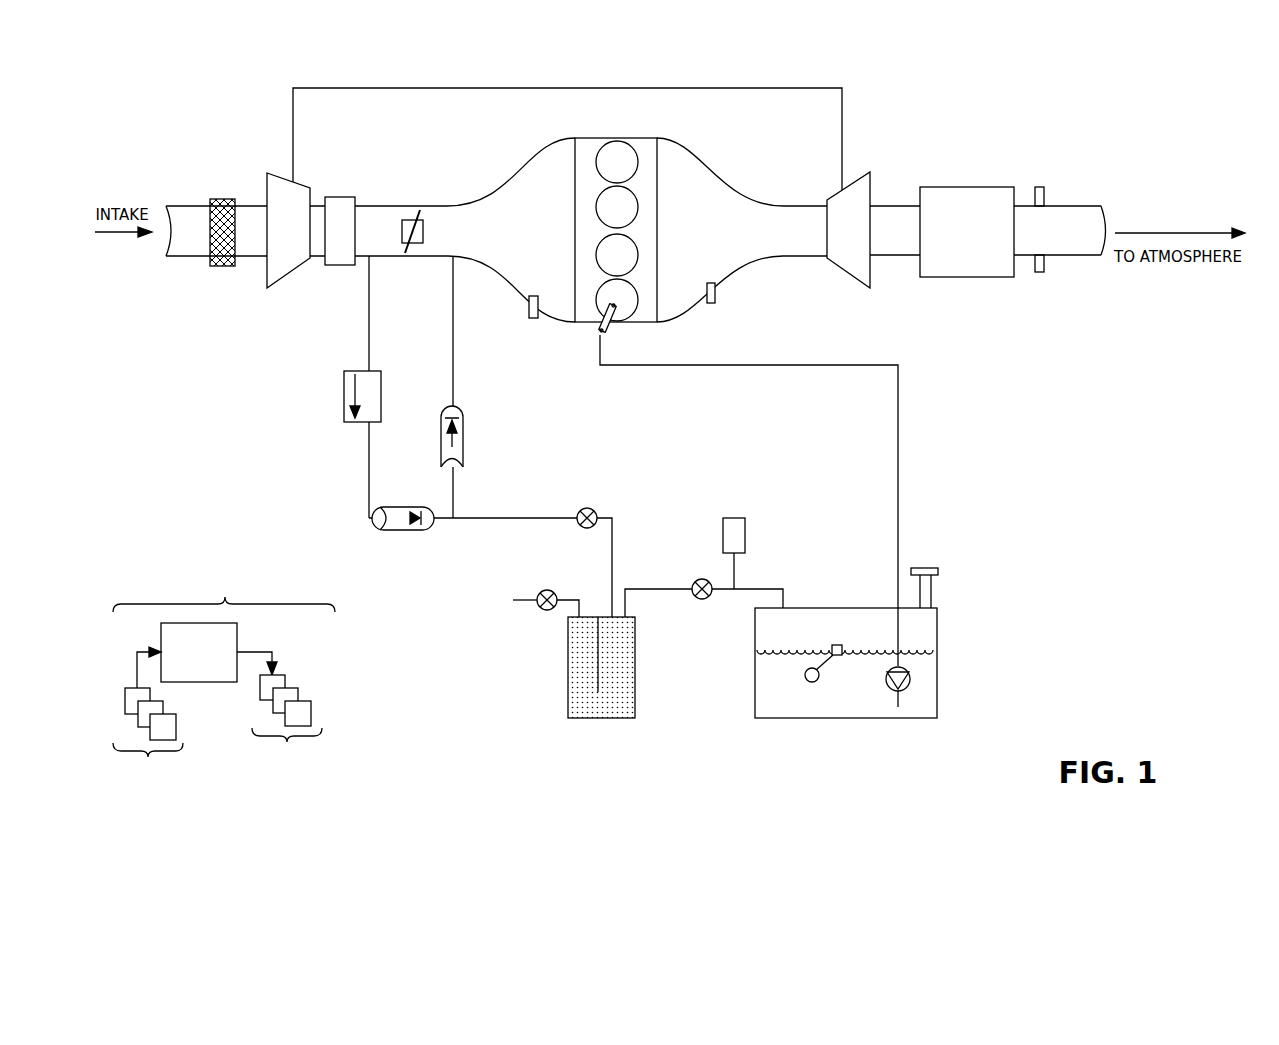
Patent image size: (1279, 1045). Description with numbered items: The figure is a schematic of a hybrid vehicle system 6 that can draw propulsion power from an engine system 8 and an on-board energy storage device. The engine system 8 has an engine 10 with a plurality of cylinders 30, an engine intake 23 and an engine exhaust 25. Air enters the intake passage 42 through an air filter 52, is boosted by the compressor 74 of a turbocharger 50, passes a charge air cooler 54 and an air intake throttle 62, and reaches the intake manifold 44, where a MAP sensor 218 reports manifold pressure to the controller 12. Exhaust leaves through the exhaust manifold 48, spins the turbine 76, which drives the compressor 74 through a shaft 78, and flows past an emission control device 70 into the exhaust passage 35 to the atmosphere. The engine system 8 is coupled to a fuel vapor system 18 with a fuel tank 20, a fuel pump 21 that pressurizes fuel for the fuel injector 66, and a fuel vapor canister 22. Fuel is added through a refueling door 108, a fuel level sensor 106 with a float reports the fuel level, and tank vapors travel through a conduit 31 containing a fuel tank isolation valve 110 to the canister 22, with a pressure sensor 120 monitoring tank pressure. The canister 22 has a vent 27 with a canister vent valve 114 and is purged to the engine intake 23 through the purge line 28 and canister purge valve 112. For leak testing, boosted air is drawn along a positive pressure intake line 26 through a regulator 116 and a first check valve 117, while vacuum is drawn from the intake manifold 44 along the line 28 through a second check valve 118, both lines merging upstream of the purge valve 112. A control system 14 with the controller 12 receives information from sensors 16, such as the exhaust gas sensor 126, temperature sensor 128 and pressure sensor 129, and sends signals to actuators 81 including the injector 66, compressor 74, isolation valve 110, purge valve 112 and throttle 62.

The hybrid vehicle system 6 is at (174, 114).
The engine system 8 is at (1138, 110).
The engine 10 is at (657, 215).
The controller 12 is at (207, 655).
The control system 14 is at (224, 585).
The sensors 16 is at (148, 741).
The fuel vapor system 18 is at (716, 752).
The fuel tank 20 is at (815, 608).
The fuel pump 21 is at (910, 680).
The fuel vapor canister 22 is at (627, 718).
The engine intake 23 is at (506, 161).
The engine exhaust 25 is at (763, 168).
The positive pressure intake line 26 is at (369, 331).
The vent 27 is at (518, 600).
The purge line 28 is at (453, 373).
The cylinders 30 is at (628, 158).
The conduit 31 is at (752, 590).
The exhaust passage 35 is at (1087, 205).
The intake passage 42 is at (190, 258).
The intake manifold 44 is at (465, 230).
The exhaust manifold 48 is at (742, 230).
The turbocharger 50 is at (556, 78).
The air filter 52 is at (222, 198).
The charge air cooler 54 is at (344, 197).
The air intake throttle 62 is at (421, 232).
The fuel injector 66 is at (612, 328).
The emission control device 70 is at (955, 187).
The compressor 74 is at (288, 230).
The turbine 76 is at (848, 230).
The shaft 78 is at (820, 86).
The actuators 81 is at (287, 728).
The fuel level sensor 106 is at (838, 645).
The refueling door 108 is at (933, 568).
The fuel tank isolation valve 110 is at (702, 578).
The canister purge valve 112 is at (589, 508).
The canister vent valve 114 is at (547, 590).
The regulator 116 is at (380, 371).
The first check valve 117 is at (395, 507).
The second check valve 118 is at (463, 415).
The pressure sensor 120 is at (744, 520).
The exhaust gas sensor 126 is at (715, 294).
The temperature sensor 128 is at (1040, 272).
The pressure sensor 129 is at (1040, 187).
The MAP sensor 218 is at (530, 300).